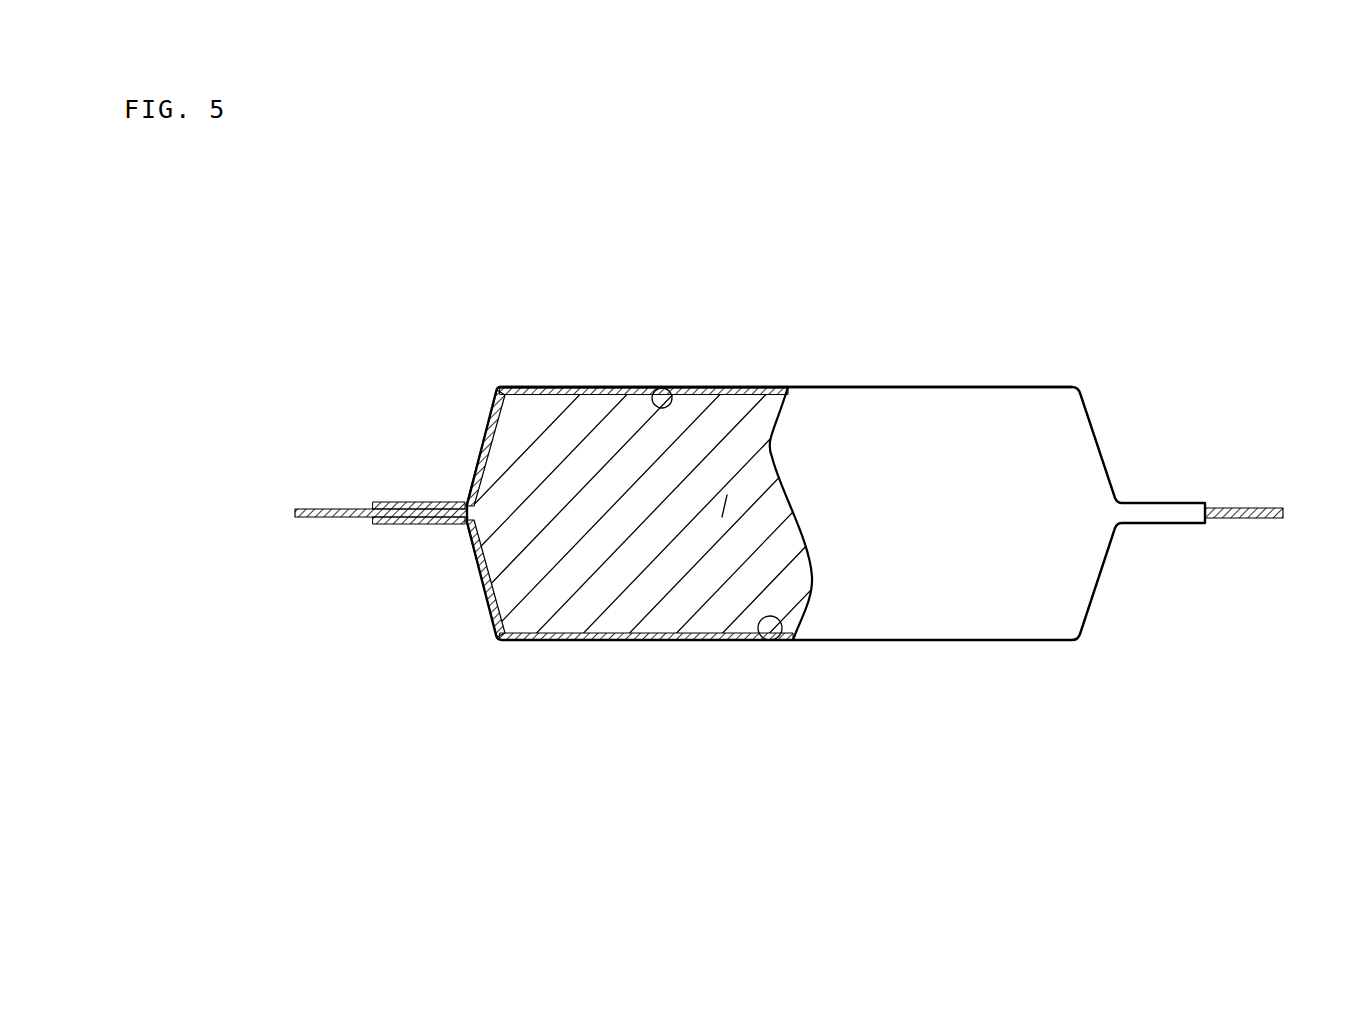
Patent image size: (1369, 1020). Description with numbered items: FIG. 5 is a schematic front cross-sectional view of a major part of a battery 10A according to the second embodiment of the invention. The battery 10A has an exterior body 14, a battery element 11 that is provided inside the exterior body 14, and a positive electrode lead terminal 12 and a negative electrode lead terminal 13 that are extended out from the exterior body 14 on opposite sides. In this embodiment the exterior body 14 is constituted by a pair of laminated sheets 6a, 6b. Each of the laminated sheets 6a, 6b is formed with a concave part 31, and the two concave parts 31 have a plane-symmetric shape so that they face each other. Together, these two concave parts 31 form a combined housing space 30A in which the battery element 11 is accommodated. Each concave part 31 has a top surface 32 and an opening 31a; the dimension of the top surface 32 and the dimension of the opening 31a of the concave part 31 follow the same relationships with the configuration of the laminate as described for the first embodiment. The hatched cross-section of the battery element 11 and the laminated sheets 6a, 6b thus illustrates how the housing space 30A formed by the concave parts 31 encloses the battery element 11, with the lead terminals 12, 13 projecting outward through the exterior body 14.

The battery 10A is at (1035, 280).
The battery element 11 is at (587, 558).
The positive electrode lead terminal 12 is at (321, 508).
The negative electrode lead terminal 13 is at (1255, 508).
The exterior body 14 is at (723, 385).
The laminated sheet 6a is at (535, 387).
The laminated sheet 6b is at (700, 637).
The housing space 30A is at (609, 447).
The concave part 31 is at (553, 452).
The opening 31a is at (722, 517).
The top surface 32 is at (673, 386).